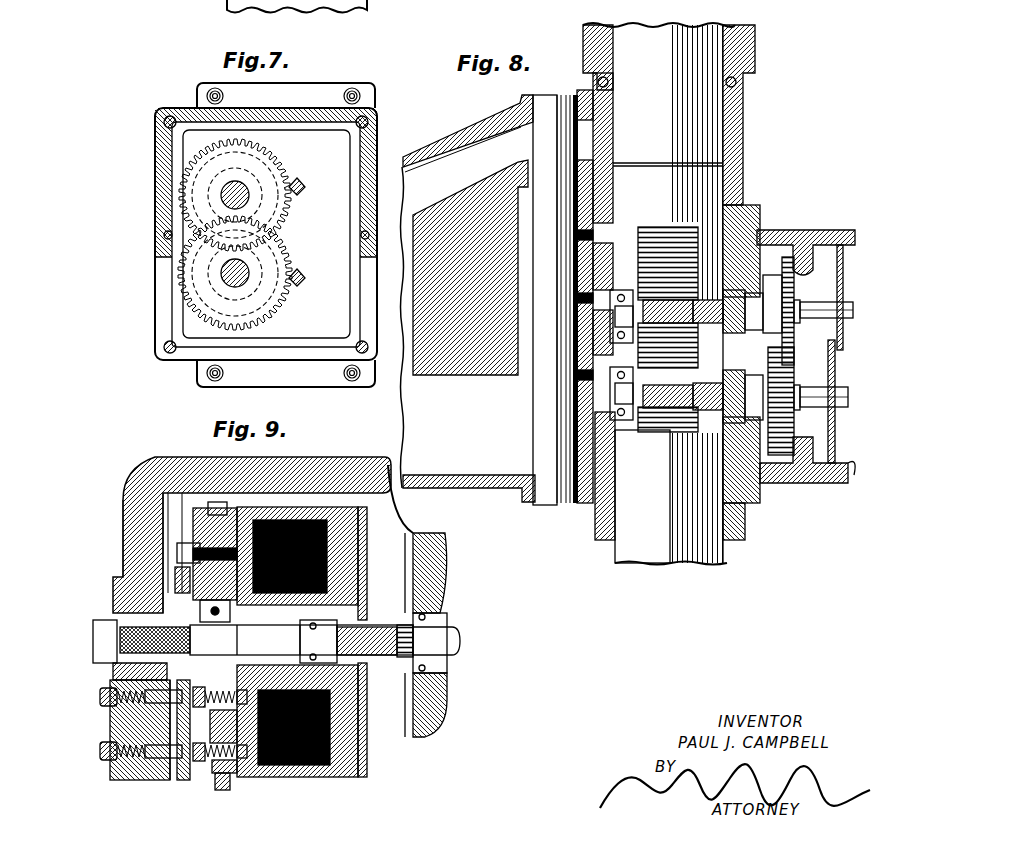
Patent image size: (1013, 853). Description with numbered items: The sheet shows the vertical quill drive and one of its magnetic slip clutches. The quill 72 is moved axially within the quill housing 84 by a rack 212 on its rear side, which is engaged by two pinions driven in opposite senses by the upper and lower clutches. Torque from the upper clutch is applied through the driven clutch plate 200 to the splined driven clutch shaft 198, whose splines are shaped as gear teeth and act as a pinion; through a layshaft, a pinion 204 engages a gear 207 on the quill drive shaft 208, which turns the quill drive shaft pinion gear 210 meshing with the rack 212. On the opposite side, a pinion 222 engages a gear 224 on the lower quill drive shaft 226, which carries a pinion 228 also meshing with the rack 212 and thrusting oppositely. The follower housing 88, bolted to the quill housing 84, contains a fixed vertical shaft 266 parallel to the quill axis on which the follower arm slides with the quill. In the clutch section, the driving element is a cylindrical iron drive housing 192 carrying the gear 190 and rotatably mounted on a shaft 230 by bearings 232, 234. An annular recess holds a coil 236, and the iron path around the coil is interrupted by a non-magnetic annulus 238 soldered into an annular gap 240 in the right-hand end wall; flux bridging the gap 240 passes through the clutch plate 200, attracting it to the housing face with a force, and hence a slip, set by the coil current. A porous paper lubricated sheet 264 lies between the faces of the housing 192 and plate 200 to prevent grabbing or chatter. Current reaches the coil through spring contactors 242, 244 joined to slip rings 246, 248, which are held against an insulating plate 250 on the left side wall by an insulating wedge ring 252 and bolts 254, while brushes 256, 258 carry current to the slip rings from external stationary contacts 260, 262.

In FIG. 8, the quill 72 is at (627, 547).
In FIG. 8, the quill housing 84 is at (742, 110).
In FIG. 8, the follower housing 88 is at (468, 135).
In FIG. 9, the gear 190 is at (297, 460).
In FIG. 9, the drive housing 192 is at (342, 775).
In FIG. 9, the splined driven clutch shaft 198 is at (375, 620).
In FIG. 9, the driven clutch plate 200 is at (365, 543).
In FIG. 7, the pinion 204 is at (306, 183).
In FIG. 7, the gear 207 is at (197, 167).
In FIG. 8, the gear 207 is at (796, 254).
In FIG. 7, the quill drive shaft 208 is at (222, 195).
In FIG. 8, the quill drive shaft 208 is at (742, 293).
In FIG. 8, the quill drive shaft pinion gear 210 is at (657, 303).
In FIG. 8, the rack 212 is at (670, 242).
In FIG. 7, the pinion 222 is at (300, 277).
In FIG. 7, the gear 224 is at (190, 283).
In FIG. 8, the gear 224 is at (773, 455).
In FIG. 7, the lower quill drive shaft 226 is at (222, 272).
In FIG. 8, the lower quill drive shaft 226 is at (712, 400).
In FIG. 8, the pinion 228 is at (672, 397).
In FIG. 9, the shaft 230 is at (282, 640).
In FIG. 9, the bearing 232 is at (212, 613).
In FIG. 9, the bearing 234 is at (363, 580).
In FIG. 9, the coil 236 is at (335, 748).
In FIG. 9, the annulus of non-magnetic material 238 is at (363, 528).
In FIG. 9, the annular gap 240 is at (351, 500).
In FIG. 9, the spring contactor 242 is at (240, 773).
In FIG. 9, the spring contactor 244 is at (260, 770).
In FIG. 9, the slip ring 246 is at (178, 547).
In FIG. 9, the slip ring 248 is at (183, 597).
In FIG. 9, the insulating plate 250 is at (215, 503).
In FIG. 9, the insulating wedge ring 252 is at (178, 558).
In FIG. 9, the bolts 254 is at (178, 580).
In FIG. 9, the brush 256 is at (173, 767).
In FIG. 9, the brush 258 is at (173, 773).
In FIG. 9, the stationary contact 260 is at (100, 760).
In FIG. 9, the stationary contact 262 is at (150, 782).
In FIG. 8, the porous paper lubricated sheet 264 is at (373, 457).
In FIG. 8, the vertical shaft 266 is at (545, 435).